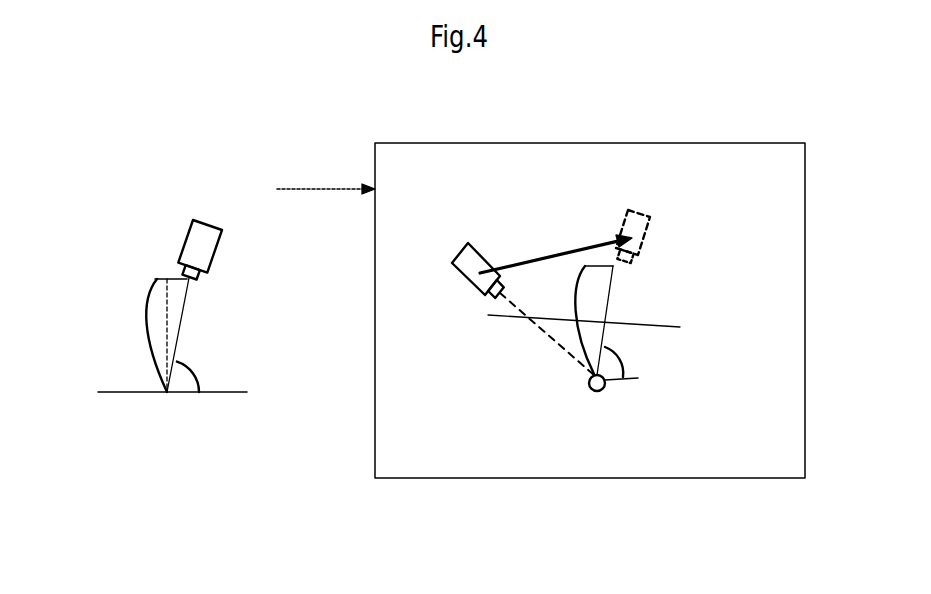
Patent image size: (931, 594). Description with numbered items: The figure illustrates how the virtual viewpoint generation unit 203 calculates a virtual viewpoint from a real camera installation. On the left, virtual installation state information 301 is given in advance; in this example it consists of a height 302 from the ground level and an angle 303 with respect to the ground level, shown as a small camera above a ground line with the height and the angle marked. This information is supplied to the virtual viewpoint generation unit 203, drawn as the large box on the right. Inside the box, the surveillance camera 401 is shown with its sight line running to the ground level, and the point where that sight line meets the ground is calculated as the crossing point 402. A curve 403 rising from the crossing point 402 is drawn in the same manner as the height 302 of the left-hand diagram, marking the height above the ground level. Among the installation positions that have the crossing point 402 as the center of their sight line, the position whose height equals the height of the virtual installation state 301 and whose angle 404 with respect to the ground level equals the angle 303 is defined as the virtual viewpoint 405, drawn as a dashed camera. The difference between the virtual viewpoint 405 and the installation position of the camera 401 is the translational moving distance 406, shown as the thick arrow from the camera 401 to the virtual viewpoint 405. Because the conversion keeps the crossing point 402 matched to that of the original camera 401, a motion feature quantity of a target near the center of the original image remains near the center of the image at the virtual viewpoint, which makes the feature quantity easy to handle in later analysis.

The virtual viewpoint generation unit 203 is at (590, 290).
The virtual installation state information 301 is at (173, 256).
The height 302 is at (125, 330).
The angle 303 is at (230, 353).
The surveillance camera 401 is at (498, 290).
The crossing point 402 is at (655, 413).
The virtual viewpoint path curve 403 is at (554, 355).
The angle 404 is at (667, 343).
The virtual viewpoint 405 is at (668, 288).
The translational moving distance 406 is at (556, 236).